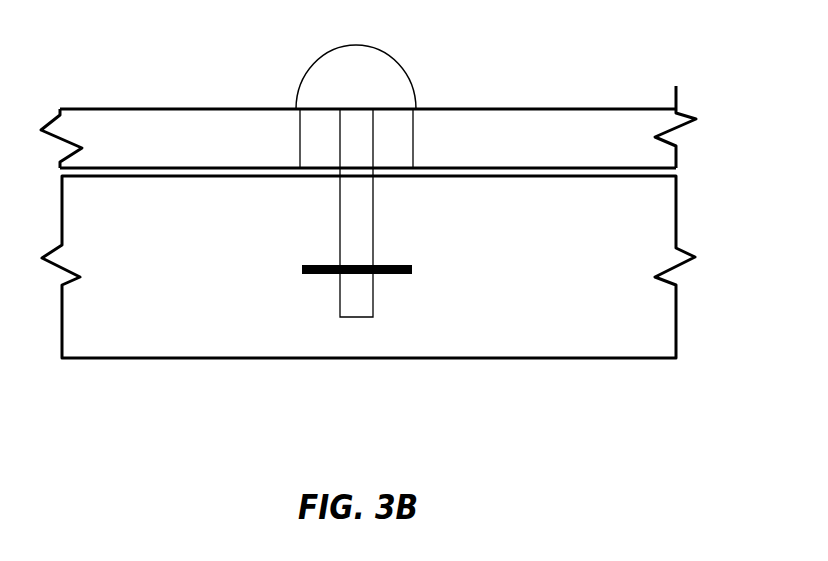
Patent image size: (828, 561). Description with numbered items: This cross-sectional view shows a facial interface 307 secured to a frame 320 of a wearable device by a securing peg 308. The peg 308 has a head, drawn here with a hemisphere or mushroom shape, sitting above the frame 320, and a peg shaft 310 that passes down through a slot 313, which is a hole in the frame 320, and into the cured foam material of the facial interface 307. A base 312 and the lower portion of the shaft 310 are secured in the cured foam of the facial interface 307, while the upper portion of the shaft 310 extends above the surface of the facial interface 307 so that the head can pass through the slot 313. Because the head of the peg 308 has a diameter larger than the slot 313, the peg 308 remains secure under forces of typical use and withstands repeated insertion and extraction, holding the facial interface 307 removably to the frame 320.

The facial interface 307 is at (612, 361).
The securing peg 308 is at (404, 71).
The peg shaft 310 is at (374, 238).
The base 312 is at (410, 270).
The slot 313 is at (320, 148).
The frame 320 is at (553, 108).